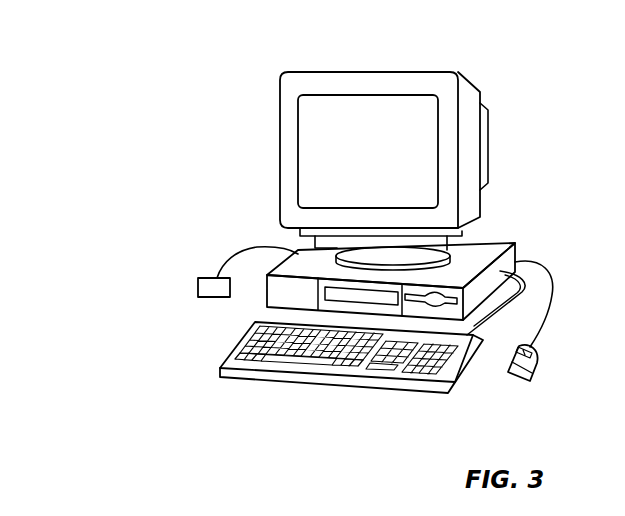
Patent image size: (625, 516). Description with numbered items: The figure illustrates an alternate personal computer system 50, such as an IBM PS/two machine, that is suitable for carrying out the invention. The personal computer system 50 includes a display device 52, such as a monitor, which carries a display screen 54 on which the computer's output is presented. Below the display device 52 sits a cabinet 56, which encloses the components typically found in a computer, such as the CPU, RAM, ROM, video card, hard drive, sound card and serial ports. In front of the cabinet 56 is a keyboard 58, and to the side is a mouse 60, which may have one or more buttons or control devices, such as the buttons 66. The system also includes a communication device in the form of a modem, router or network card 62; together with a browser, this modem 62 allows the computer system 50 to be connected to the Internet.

The personal computer system 50 is at (545, 63).
The display device 52 is at (407, 154).
The display screen 54 is at (374, 113).
The cabinet 56 is at (507, 243).
The keyboard 58 is at (328, 385).
The mouse 60 is at (545, 321).
The modem, router or network card 62 is at (210, 278).
The buttons 66 is at (533, 347).